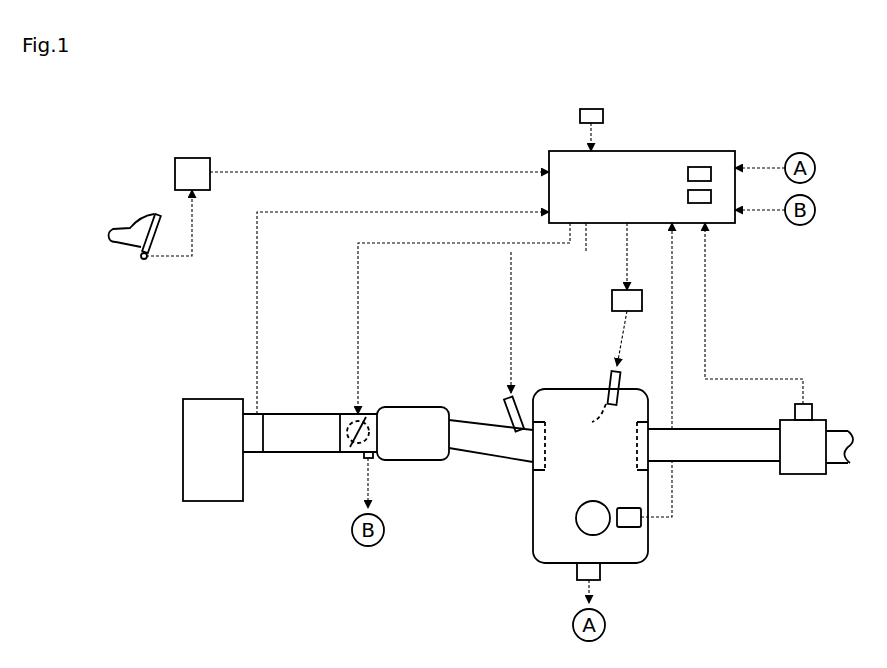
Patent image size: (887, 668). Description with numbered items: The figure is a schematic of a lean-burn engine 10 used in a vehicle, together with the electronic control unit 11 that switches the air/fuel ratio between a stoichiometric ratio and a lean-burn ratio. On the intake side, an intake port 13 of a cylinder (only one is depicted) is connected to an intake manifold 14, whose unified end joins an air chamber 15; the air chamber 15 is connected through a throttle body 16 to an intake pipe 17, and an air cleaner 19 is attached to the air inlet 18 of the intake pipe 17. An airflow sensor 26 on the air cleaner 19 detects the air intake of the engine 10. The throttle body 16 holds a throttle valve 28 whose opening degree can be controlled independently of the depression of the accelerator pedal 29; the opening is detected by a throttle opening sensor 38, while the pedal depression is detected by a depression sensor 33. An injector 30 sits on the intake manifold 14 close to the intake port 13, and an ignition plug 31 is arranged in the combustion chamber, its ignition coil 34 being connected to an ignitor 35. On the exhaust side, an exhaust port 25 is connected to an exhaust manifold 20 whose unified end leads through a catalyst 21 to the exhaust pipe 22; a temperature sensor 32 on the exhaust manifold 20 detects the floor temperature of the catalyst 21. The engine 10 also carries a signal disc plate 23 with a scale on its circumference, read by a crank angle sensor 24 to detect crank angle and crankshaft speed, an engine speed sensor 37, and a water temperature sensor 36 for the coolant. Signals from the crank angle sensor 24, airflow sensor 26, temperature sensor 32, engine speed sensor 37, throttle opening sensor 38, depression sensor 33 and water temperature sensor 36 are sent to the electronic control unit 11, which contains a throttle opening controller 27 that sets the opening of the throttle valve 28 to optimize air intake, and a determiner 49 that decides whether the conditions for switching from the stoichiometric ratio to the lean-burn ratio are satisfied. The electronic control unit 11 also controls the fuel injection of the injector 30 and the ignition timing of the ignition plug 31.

The engine 10 is at (583, 385).
The electronic control unit 11 is at (697, 148).
The intake port 13 is at (538, 478).
The intake manifold 14 is at (474, 460).
The air chamber 15 is at (432, 406).
The throttle body 16 is at (350, 453).
The intake pipe 17 is at (297, 453).
The air inlet 18 is at (241, 432).
The air cleaner 19 is at (220, 503).
The exhaust manifold 20 is at (737, 462).
The catalyst 21 is at (803, 475).
The exhaust pipe 22 is at (836, 430).
The signal disc plate 23 is at (592, 501).
The crank angle sensor 24 is at (623, 508).
The exhaust port 25 is at (628, 444).
The airflow sensor 26 is at (262, 453).
The throttle opening controller 27 is at (708, 203).
The throttle valve 28 is at (372, 406).
The accelerator pedal 29 is at (158, 212).
The injector 30 is at (517, 405).
The ignition plug 31 is at (592, 422).
The temperature sensor 32 is at (795, 410).
The depression sensor 33 is at (206, 191).
The ignition coil 34 is at (620, 382).
The ignitor 35 is at (612, 300).
The water temperature sensor 36 is at (604, 116).
The engine speed sensor 37 is at (601, 576).
The throttle opening sensor 38 is at (371, 459).
The determiner 49 is at (700, 167).